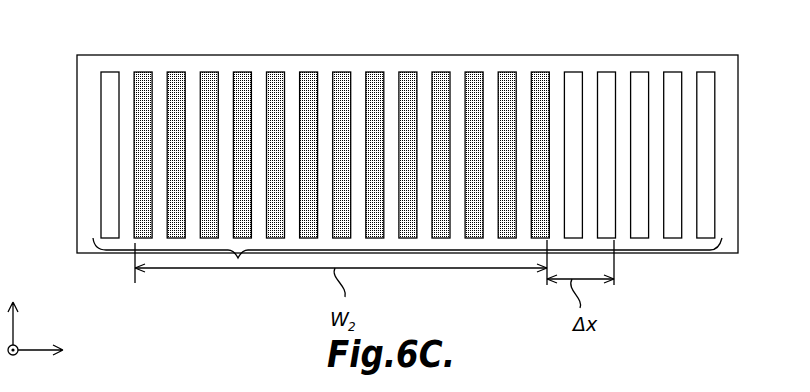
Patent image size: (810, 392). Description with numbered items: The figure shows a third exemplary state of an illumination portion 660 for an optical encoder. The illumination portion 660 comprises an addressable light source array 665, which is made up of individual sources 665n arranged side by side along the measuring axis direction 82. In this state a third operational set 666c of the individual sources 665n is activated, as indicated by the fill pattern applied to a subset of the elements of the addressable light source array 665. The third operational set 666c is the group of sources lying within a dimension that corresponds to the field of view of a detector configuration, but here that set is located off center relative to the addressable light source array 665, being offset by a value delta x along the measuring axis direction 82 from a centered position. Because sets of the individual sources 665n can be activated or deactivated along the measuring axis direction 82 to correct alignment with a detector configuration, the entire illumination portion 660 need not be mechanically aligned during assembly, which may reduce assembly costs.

The illumination portion 660 is at (682, 34).
The addressable light source array 665 is at (365, 124).
The third operational set 666c is at (341, 124).
The individual sources 665n is at (238, 258).
The measuring axis direction 82 is at (62, 320).